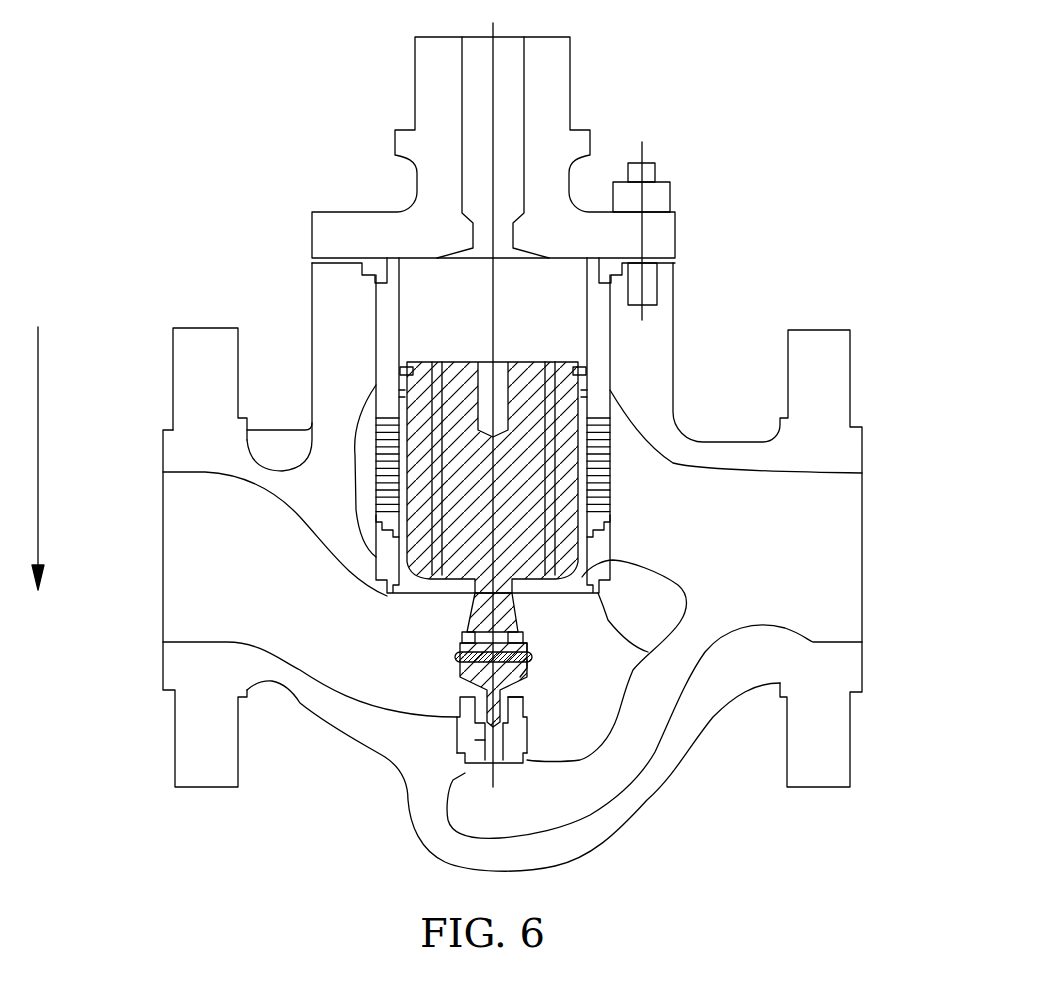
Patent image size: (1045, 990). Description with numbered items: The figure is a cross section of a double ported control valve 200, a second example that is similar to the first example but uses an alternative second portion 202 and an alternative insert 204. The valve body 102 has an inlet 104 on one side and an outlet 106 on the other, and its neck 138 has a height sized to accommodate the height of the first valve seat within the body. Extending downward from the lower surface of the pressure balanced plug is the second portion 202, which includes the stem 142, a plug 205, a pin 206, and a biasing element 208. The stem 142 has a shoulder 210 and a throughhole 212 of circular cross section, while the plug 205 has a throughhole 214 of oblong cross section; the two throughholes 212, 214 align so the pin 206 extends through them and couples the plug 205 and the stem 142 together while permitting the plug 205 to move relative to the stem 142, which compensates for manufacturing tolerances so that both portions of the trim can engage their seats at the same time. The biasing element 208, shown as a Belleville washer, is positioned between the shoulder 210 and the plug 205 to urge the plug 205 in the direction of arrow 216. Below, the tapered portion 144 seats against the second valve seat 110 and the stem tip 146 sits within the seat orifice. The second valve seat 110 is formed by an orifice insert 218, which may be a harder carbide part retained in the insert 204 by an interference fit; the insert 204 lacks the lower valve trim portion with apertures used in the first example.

The valve body 102 is at (173, 357).
The inlet 104 is at (163, 500).
The outlet 106 is at (847, 535).
The second valve seat 110 is at (527, 717).
The neck 138 is at (578, 483).
The stem 142 is at (473, 618).
The tapered portion 144 is at (477, 687).
The stem tip 146 is at (483, 723).
The double ported control valve 200 is at (821, 53).
The second portion 202 is at (613, 560).
The insert 204 is at (513, 750).
The plug 205 is at (517, 697).
The pin 206 is at (455, 657).
The biasing element 208 is at (462, 638).
The shoulder 210 is at (517, 632).
The throughhole 212 is at (525, 647).
The throughhole 214 is at (523, 660).
The arrow 216 is at (38, 443).
The orifice insert 218 is at (480, 745).